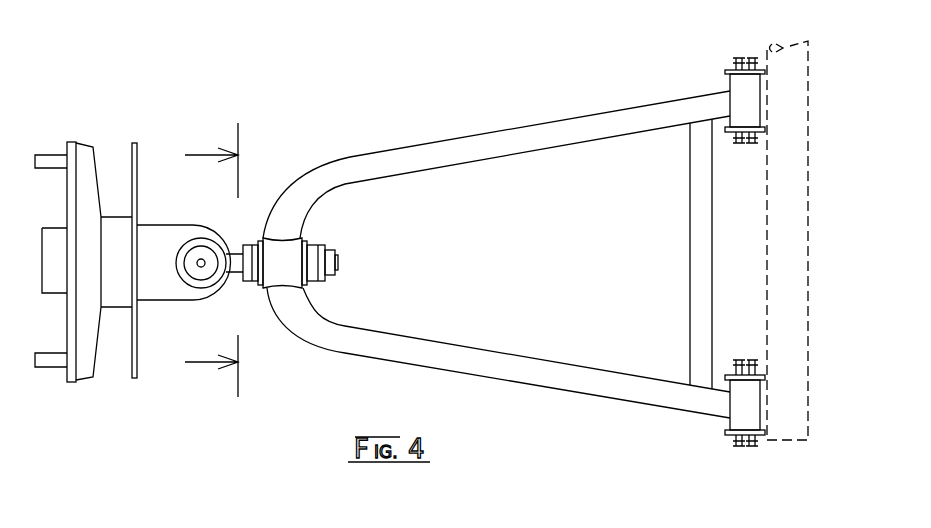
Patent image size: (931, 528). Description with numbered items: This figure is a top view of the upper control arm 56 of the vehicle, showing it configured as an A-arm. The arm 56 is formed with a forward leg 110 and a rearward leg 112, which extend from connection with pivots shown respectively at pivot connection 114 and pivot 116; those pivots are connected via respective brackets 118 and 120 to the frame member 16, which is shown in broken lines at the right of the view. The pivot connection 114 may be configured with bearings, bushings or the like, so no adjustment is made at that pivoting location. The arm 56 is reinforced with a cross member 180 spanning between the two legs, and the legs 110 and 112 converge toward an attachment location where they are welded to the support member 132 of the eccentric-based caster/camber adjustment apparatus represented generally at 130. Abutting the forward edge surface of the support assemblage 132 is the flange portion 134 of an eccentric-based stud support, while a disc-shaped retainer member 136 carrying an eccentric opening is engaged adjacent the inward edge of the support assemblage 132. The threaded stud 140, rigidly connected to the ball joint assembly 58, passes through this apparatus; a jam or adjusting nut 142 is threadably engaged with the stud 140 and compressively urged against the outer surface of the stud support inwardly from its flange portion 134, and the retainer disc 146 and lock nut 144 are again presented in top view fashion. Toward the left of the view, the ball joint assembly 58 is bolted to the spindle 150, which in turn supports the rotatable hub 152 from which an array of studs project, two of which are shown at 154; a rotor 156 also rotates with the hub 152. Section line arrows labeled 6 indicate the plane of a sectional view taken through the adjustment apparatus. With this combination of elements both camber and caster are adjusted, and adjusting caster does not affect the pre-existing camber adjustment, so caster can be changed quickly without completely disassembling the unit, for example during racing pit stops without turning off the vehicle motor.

The frame member 16 is at (798, 238).
The upper control arm 56 is at (496, 273).
The ball joint assembly 58 is at (210, 263).
The section line 6- 6 is at (224, 260).
The forward leg 110 is at (543, 387).
The rearward leg 112 is at (540, 124).
The pivot connection 114 is at (730, 425).
The pivot 116 is at (730, 84).
The bracket 118 is at (765, 437).
The bracket 120 is at (766, 70).
The eccentric-based caster/camber adjustment apparatus 130 is at (320, 251).
The support assemblage 132 is at (219, 242).
The flange portion 134 is at (260, 241).
The disc-shaped retainer member 136 is at (306, 286).
The threaded stud 140 is at (230, 283).
The jam nut 142 is at (250, 281).
The lock nut 144 is at (323, 246).
The retainer disc 146 is at (338, 266).
The spindle 150 is at (158, 294).
The hub 152 is at (88, 150).
The studs 154 is at (43, 368).
The rotor 156 is at (137, 143).
The cross member 180 is at (690, 268).